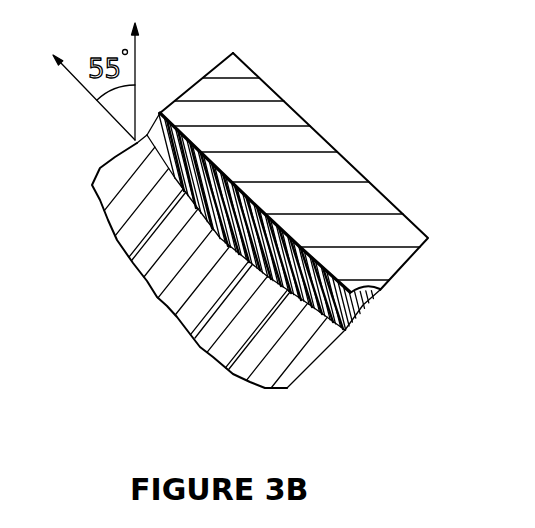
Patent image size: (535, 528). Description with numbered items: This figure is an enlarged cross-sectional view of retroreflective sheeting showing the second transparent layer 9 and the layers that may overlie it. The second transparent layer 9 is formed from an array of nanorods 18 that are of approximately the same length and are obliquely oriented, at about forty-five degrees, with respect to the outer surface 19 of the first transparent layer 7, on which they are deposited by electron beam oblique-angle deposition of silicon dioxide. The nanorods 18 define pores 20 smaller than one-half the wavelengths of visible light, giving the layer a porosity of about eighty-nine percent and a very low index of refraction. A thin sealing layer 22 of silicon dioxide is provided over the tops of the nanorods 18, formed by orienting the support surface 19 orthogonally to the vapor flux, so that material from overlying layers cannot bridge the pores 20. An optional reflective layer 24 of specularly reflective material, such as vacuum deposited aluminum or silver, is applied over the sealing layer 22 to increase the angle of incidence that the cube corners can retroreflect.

The first transparent layer 7 is at (180, 301).
The second transparent layer 9 is at (353, 329).
The nanorods 18 is at (302, 270).
The outer surface 19 is at (180, 178).
The pores 20 is at (248, 228).
The sealing layer 22 is at (380, 289).
The reflective layer 24 is at (325, 165).